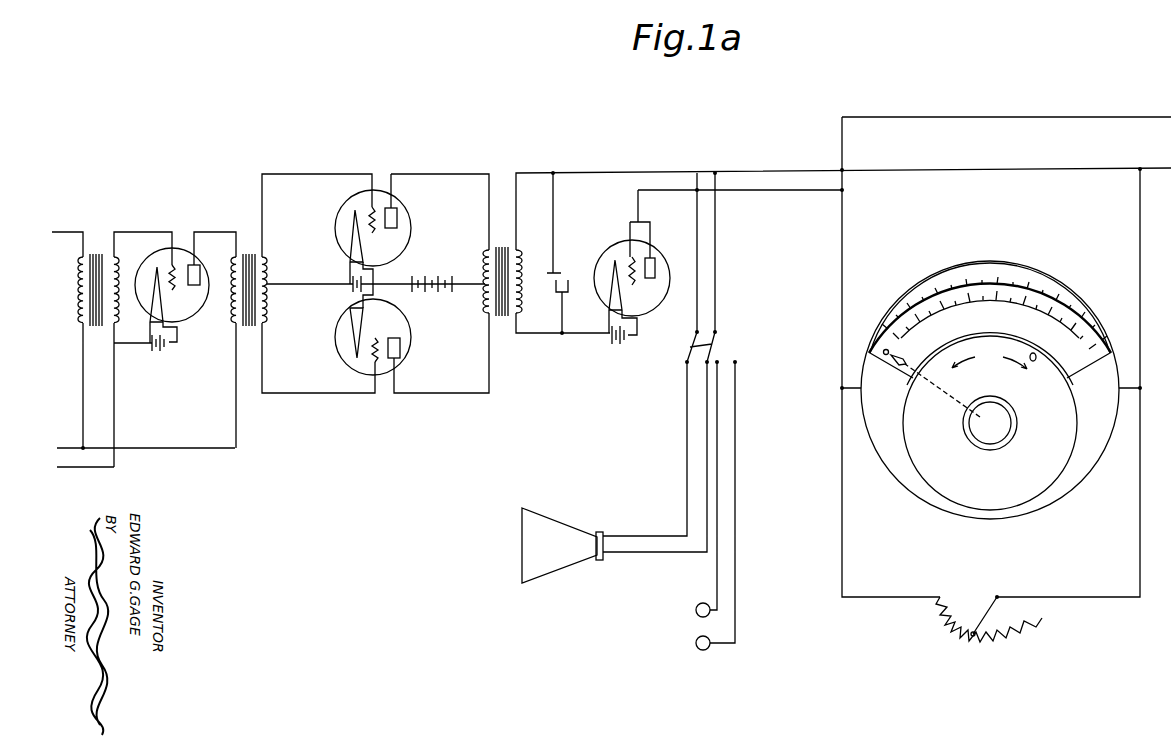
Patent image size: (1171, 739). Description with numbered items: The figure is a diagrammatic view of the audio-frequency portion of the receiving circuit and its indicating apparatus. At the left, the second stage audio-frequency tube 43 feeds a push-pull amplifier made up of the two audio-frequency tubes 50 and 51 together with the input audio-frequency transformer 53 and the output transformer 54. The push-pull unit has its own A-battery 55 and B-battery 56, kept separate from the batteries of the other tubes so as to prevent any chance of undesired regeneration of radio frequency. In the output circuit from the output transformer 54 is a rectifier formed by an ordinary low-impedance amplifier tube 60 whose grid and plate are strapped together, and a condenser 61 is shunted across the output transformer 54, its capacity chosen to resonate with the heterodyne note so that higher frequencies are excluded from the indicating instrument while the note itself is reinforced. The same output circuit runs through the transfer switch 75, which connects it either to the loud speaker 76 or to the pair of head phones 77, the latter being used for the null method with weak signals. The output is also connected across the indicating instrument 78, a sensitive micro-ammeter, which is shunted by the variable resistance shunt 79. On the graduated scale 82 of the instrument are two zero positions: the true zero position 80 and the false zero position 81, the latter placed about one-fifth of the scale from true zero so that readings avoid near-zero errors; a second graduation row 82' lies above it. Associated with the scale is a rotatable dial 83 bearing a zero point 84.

The second stage audio-frequency tube 43 is at (190, 317).
The audio-frequency tube 50 is at (411, 236).
The audio-frequency tube 51 is at (411, 336).
The input audio-frequency transformer 53 is at (243, 256).
The output transformer 54 is at (500, 256).
The A-battery 55 is at (352, 288).
The B-battery 56 is at (437, 291).
The amplifier tube 60 is at (658, 302).
The condenser 61 is at (560, 273).
The transfer switch 75 is at (712, 347).
The loud speaker 76 is at (577, 560).
The pair of head phones 77 is at (698, 639).
The indicating instrument 78 is at (1100, 447).
The variable resistance shunt 79 is at (989, 631).
The zero position 80 is at (885, 349).
The zero position 81 is at (899, 350).
The graduated scale 82 is at (994, 303).
The upper scale 82' is at (991, 311).
The rotatable dial 83 is at (1048, 468).
The zero point 84 is at (1038, 362).